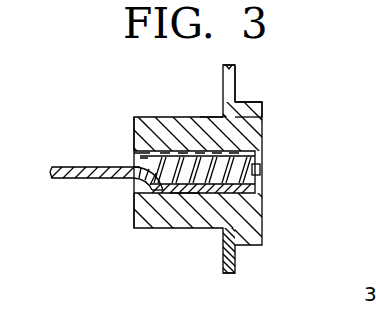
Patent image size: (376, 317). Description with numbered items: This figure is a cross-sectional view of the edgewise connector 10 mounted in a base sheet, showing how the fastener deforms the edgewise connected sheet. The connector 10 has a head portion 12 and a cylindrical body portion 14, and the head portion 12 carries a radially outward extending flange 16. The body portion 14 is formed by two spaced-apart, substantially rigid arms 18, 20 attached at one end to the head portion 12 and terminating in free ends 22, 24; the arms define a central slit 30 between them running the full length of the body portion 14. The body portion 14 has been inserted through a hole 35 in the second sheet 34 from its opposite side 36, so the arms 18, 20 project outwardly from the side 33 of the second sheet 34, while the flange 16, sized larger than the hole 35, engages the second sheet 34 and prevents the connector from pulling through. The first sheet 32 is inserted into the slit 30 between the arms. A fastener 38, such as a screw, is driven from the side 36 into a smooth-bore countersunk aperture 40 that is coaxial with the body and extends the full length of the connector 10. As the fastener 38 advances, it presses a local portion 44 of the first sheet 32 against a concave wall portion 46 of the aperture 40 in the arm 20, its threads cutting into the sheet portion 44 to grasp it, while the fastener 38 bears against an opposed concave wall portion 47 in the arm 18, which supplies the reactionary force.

The edgewise connector 10 is at (278, 192).
The head portion 12 is at (262, 128).
The cylindrical body portion 14 is at (152, 229).
The flange 16 is at (258, 104).
The arm 18 is at (148, 117).
The arm 20 is at (208, 230).
The free end 22 is at (131, 124).
The free end 24 is at (133, 223).
The central slit 30 is at (137, 183).
The first sheet 32 is at (70, 180).
The side of second sheet 33 is at (223, 72).
The second sheet 34 is at (233, 69).
The hole 35 is at (218, 116).
The opposite side of second sheet 36 is at (236, 88).
The fastener 38 is at (262, 154).
The countersunk aperture 40 is at (132, 160).
The local portion of first sheet 44 is at (183, 230).
The concave wall portion 46 is at (136, 192).
The opposed concave wall portion 47 is at (132, 152).